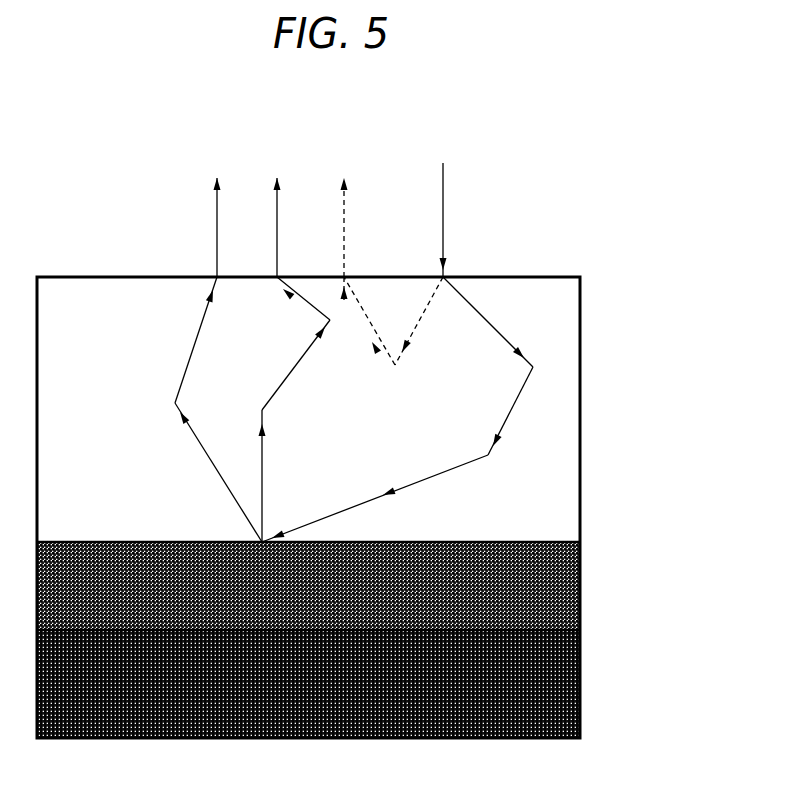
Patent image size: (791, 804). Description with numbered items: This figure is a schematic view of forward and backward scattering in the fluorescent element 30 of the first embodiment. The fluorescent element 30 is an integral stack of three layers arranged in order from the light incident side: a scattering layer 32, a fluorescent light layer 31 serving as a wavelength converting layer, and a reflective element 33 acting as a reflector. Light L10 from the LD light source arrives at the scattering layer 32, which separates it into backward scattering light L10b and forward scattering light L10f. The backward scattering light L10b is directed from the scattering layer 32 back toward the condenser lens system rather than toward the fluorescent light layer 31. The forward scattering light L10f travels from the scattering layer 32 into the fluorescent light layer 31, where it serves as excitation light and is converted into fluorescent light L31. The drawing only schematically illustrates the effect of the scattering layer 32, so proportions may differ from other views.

The fluorescent element 30 is at (382, 507).
The fluorescent light layer 31 is at (578, 575).
The scattering layer 32 is at (580, 475).
The reflective element 33 is at (344, 684).
The light L10 is at (446, 204).
The forward scattering light L10f is at (500, 333).
The backward scattering light L10b is at (346, 205).
The fluorescent light L31 is at (215, 215).